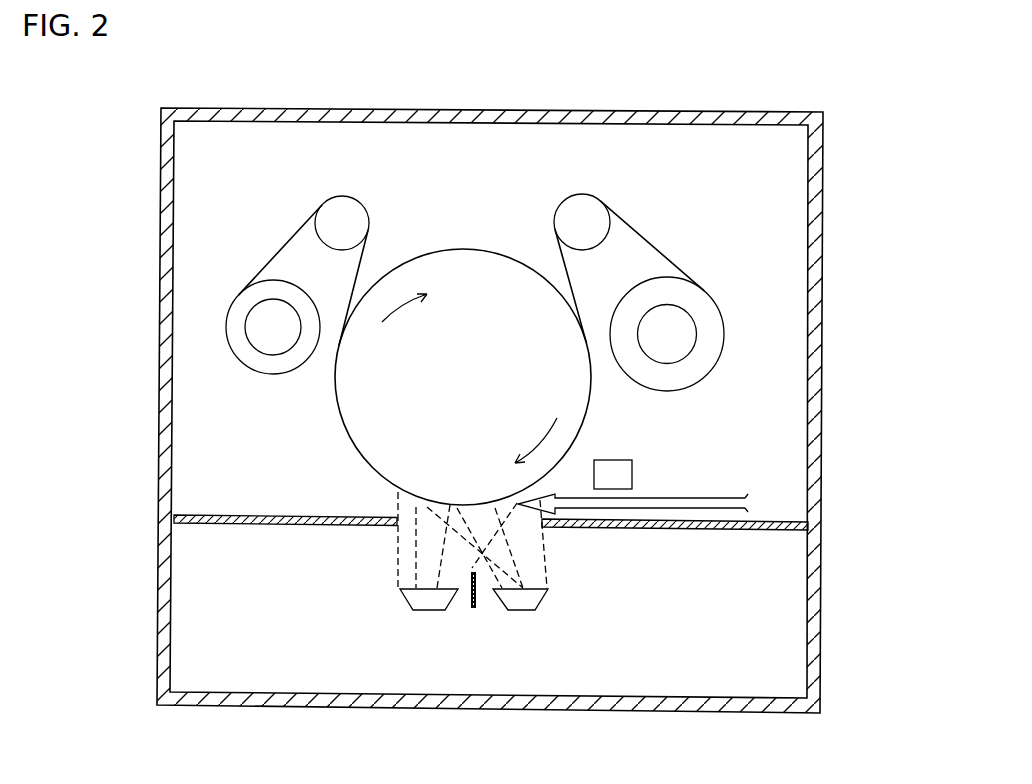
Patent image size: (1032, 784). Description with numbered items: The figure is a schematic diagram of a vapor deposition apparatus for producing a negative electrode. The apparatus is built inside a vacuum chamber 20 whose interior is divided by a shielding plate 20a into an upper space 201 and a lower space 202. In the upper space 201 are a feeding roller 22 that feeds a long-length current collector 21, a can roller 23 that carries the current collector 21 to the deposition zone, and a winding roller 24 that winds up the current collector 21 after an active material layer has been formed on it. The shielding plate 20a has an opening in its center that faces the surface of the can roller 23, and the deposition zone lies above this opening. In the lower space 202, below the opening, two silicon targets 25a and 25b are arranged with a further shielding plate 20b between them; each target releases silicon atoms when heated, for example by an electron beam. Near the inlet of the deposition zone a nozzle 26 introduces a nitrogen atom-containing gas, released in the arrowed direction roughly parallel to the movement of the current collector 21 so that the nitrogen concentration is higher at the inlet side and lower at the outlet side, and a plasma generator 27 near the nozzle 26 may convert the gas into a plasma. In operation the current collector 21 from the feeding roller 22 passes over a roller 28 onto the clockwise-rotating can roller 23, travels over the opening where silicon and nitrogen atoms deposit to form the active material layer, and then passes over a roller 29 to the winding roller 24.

The vacuum chamber 20 is at (818, 165).
The upper space 201 is at (770, 238).
The lower space 202 is at (780, 620).
The shielding plate 20a is at (268, 522).
The shielding plate 20b is at (475, 603).
The current collector 21 is at (282, 248).
The feeding roller 22 is at (677, 337).
The can roller 23 is at (463, 273).
The winding roller 24 is at (270, 325).
The silicon target 25a is at (527, 602).
The silicon target 25b is at (427, 603).
The nozzle 26 is at (692, 498).
The plasma generator 27 is at (616, 470).
The roller 28 is at (594, 215).
The roller 29 is at (342, 212).